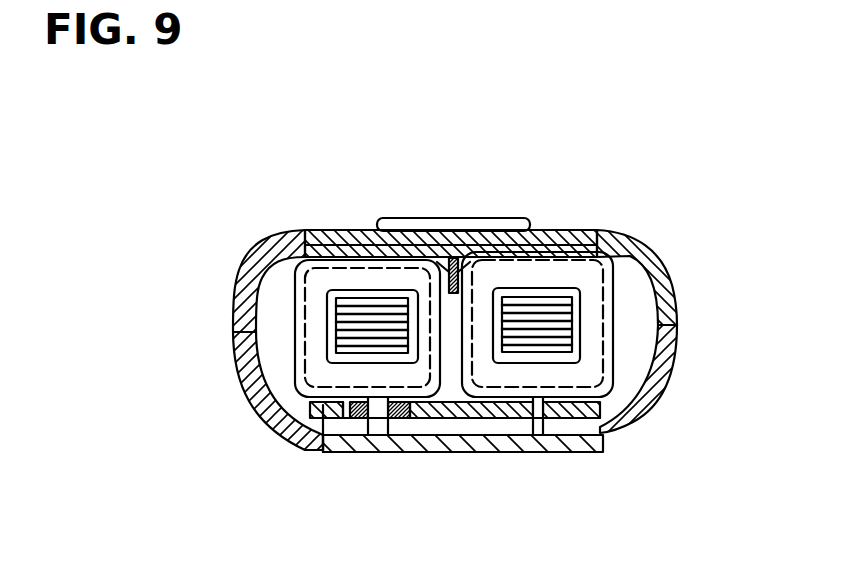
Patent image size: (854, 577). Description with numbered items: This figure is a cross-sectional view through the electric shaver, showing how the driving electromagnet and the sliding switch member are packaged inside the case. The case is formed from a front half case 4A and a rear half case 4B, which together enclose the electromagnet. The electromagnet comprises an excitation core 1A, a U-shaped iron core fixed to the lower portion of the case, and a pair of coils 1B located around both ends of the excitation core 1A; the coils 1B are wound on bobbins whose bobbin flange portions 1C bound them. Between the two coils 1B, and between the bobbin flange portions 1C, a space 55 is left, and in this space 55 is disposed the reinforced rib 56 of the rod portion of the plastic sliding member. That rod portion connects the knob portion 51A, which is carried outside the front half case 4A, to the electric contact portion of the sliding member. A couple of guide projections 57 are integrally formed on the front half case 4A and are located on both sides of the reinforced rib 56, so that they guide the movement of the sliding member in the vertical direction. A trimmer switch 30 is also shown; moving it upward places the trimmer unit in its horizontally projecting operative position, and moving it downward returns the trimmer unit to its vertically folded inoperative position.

The excitation core 1A is at (347, 307).
The coils 1B is at (295, 375).
The bobbin flange portions 1C is at (297, 347).
The front half case 4A is at (667, 268).
The rear half case 4B is at (655, 405).
The trimmer switch 30 is at (506, 450).
The knob portion 51A is at (492, 218).
The space 55 is at (453, 357).
The reinforced rib 56 is at (455, 258).
The guide projections 57 is at (445, 266).